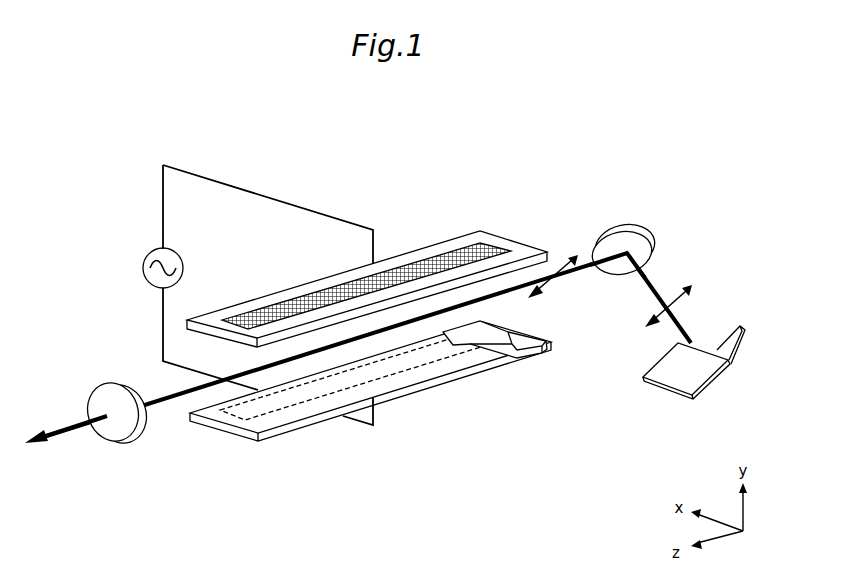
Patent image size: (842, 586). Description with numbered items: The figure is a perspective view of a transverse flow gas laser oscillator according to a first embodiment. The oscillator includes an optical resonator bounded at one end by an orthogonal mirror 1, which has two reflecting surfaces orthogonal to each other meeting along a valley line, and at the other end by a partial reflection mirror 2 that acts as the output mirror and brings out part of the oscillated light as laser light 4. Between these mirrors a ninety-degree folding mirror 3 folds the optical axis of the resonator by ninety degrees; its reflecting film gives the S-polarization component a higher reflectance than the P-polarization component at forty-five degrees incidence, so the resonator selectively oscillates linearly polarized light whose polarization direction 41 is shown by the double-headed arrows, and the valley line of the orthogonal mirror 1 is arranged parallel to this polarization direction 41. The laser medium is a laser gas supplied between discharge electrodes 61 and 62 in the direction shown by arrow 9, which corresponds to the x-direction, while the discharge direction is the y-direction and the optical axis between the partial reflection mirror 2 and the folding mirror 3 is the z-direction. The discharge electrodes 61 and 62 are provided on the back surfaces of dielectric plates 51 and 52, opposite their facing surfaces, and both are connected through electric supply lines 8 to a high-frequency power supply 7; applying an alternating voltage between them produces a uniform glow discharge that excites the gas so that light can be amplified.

The orthogonal mirror 1 is at (743, 325).
The partial reflection mirror 2 is at (105, 382).
The 90-degree folding mirror 3 is at (636, 227).
The laser light 4 is at (67, 428).
The polarization direction 41 is at (556, 267).
The dielectric plate 51 is at (367, 243).
The dielectric plate 52 is at (370, 419).
The discharge electrode 61 is at (471, 247).
The discharge electrode 62 is at (240, 416).
The high-frequency power supply 7 is at (148, 248).
The electric supply line 8 is at (208, 173).
The arrow 9 is at (538, 356).